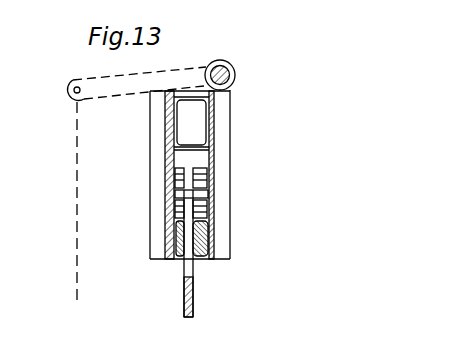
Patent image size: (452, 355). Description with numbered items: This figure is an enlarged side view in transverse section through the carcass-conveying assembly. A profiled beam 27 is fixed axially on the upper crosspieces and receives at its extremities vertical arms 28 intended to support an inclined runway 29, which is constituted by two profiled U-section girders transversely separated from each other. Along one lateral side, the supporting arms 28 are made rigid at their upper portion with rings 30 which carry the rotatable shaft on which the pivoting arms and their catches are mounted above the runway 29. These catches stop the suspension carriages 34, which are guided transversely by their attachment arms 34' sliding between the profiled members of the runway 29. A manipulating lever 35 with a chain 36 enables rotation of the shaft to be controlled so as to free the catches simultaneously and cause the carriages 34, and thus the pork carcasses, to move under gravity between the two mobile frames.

The manipulating lever 35 is at (176, 75).
The chain 36 is at (76, 257).
The ring 30 is at (236, 72).
The inclined runway 29 is at (214, 224).
The profiled beam 27 is at (194, 143).
The suspension carriage 34 is at (239, 178).
The vertical arm 28 is at (176, 250).
The attachment arm 34' is at (249, 253).